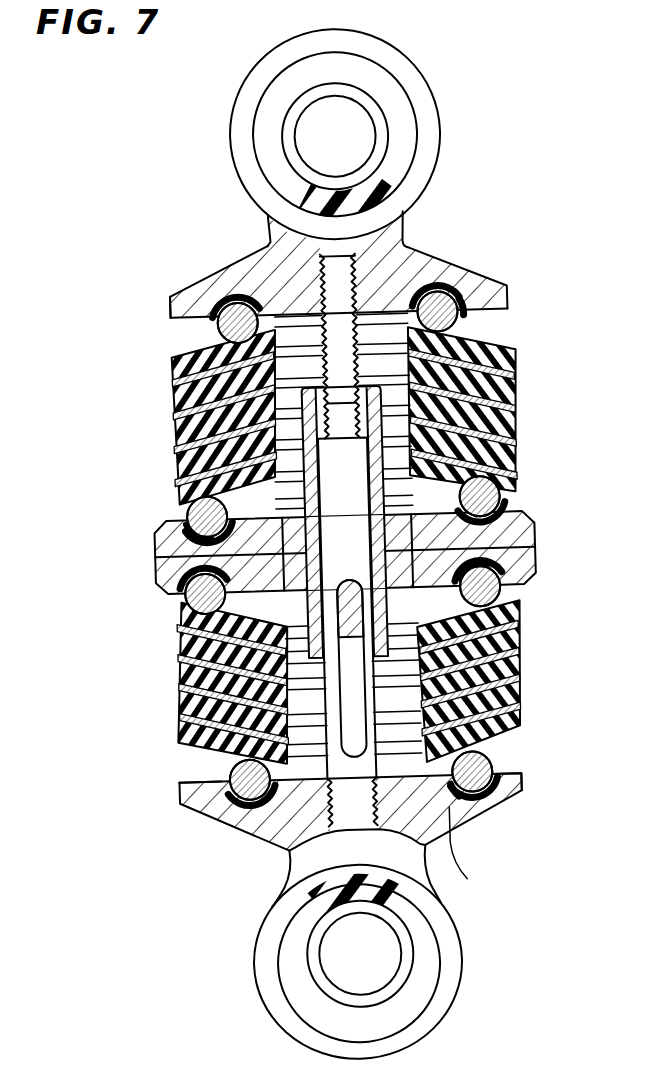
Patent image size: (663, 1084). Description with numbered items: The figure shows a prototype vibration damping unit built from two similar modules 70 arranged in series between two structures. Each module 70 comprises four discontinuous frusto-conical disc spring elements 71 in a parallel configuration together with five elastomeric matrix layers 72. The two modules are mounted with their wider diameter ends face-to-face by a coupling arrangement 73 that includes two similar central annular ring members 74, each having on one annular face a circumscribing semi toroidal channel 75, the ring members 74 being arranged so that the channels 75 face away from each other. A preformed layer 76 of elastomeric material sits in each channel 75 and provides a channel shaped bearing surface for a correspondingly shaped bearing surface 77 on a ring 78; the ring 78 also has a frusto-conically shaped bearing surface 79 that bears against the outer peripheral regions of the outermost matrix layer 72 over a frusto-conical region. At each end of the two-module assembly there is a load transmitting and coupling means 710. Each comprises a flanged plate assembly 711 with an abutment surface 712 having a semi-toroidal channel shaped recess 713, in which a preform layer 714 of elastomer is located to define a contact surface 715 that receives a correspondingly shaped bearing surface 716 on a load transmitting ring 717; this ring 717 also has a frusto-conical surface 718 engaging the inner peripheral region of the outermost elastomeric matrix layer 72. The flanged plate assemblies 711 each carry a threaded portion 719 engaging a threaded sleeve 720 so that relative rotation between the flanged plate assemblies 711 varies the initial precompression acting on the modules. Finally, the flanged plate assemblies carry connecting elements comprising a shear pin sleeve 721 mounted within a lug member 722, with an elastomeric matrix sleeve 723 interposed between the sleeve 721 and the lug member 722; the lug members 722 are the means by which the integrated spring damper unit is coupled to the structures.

The module 70 is at (334, 540).
The discontinuous frusto-conical disc spring element 71 is at (514, 377).
The elastomeric matrix layer 72 is at (514, 403).
The coupling arrangement 73 is at (329, 564).
The central annular ring member 74 is at (188, 528).
The circumscribing semi torroidal channel 75 is at (533, 554).
The preformed layer of elastomeric material 76 is at (502, 512).
The bearing surface 77 is at (536, 542).
The ring 78 is at (504, 504).
The frusto-conically shaped bearing surface 79 is at (191, 513).
The load transmitting and coupling means 710 is at (357, 556).
The flanged plate assembly 711 is at (206, 308).
The abutment surface 712 is at (483, 777).
The semi-torroidal channel shaped recess 713 is at (466, 792).
The preform layer of an elastomer 714 is at (224, 322).
The contact surface 715 is at (443, 812).
The bearing surface 716 is at (226, 763).
The load transmitting ring 717 is at (466, 316).
The frusto-conical surface 718 is at (474, 330).
The threaded portion 719 is at (355, 272).
The threaded sleeve 720 is at (318, 514).
The shear pin sleeve 721 is at (305, 116).
The lug member 722 is at (290, 171).
The elastomeric matrix sleeve 723 is at (432, 178).